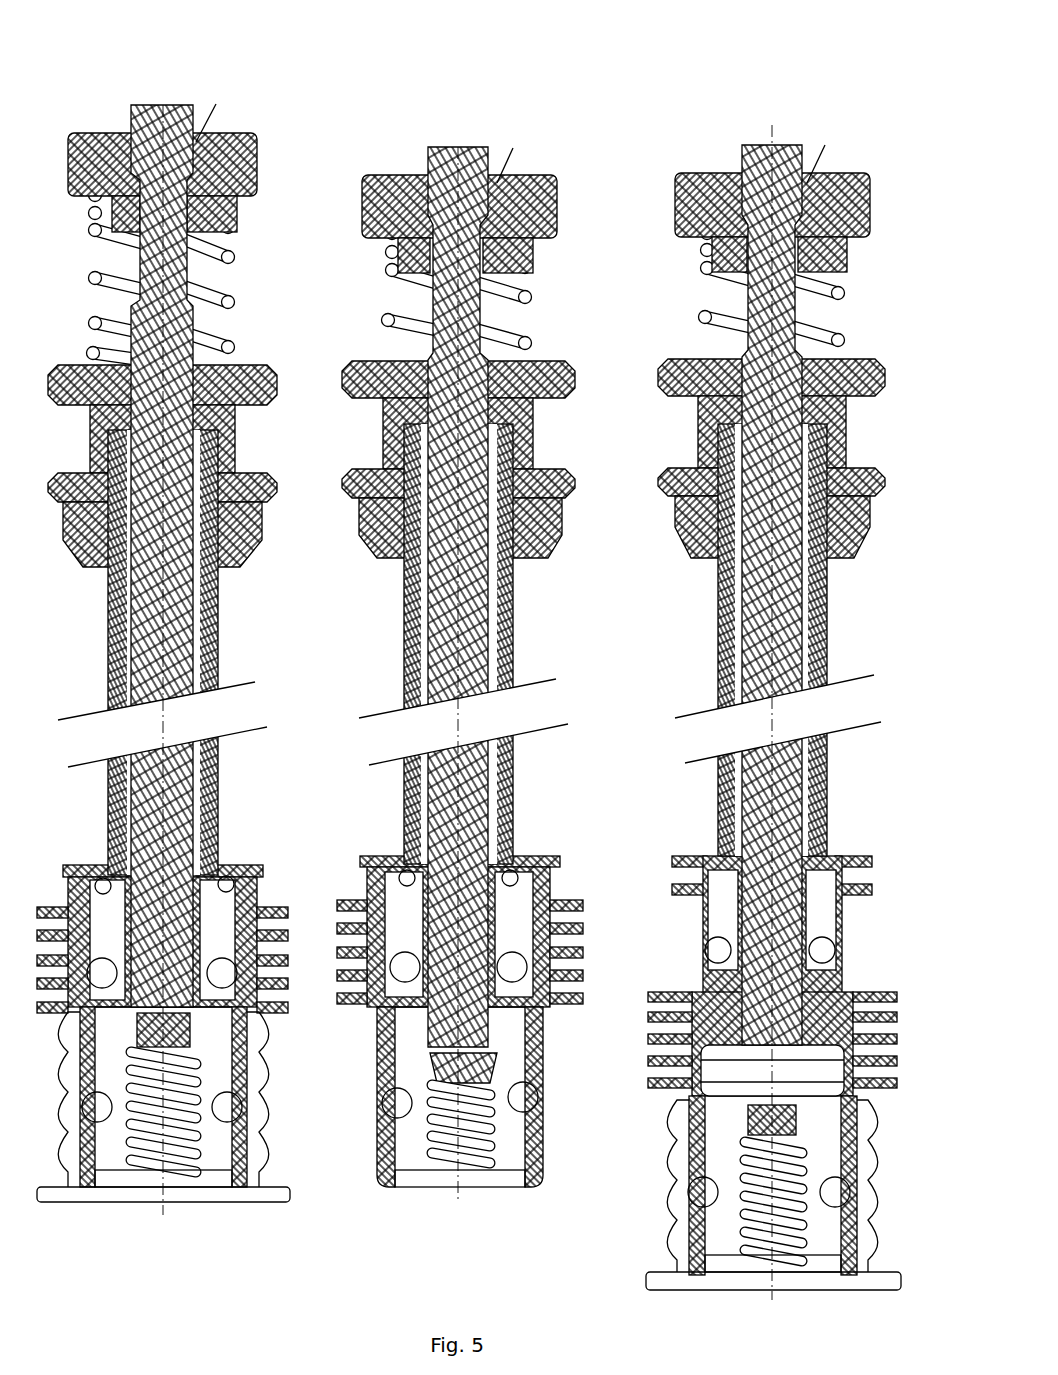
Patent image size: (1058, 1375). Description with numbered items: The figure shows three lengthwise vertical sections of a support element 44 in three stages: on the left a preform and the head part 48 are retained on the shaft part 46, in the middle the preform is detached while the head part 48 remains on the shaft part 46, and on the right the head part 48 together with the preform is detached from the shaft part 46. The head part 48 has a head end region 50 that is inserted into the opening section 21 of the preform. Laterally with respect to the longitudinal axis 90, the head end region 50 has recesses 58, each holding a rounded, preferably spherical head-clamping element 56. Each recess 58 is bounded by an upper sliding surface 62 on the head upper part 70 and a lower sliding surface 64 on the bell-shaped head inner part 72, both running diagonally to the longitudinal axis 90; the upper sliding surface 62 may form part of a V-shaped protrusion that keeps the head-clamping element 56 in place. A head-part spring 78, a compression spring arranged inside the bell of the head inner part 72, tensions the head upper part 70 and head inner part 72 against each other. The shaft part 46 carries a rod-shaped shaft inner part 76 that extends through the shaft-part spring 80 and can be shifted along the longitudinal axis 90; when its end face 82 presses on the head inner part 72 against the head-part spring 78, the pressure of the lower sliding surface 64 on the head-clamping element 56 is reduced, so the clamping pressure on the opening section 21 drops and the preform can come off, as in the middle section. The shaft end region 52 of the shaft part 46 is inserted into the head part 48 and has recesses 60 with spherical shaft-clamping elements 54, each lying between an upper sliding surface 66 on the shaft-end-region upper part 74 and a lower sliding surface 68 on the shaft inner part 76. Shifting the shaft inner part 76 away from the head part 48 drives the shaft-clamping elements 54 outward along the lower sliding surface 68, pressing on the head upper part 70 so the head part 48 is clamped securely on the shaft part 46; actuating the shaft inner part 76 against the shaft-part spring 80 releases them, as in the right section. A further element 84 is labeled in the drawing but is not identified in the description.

The support element 44 is at (158, 95).
The longitudinal axis 90 is at (198, 110).
The shaft-part spring 80 is at (232, 290).
The shaft part 46 is at (246, 650).
The shaft inner part 76 is at (517, 665).
The shaft-end-region upper part 74 is at (488, 918).
The shaft end region 52 is at (263, 900).
The recesses 60 is at (562, 920).
The shaft-clamping element 54 is at (548, 952).
The upper sliding surface 66 is at (792, 926).
The lower sliding surface 68 is at (835, 968).
The head upper part 70 is at (197, 1092).
The upper sliding surface 62 is at (365, 1055).
The head-clamping element 56 is at (370, 1095).
The lower sliding surface 64 is at (375, 1100).
The head end region 50 is at (175, 1161).
The head part 48 is at (553, 1042).
The recesses 58 is at (550, 1074).
The end face 82 is at (660, 1080).
The finned body 84 is at (650, 1094).
The head-part spring 78 is at (502, 1132).
The head inner part 72 is at (548, 1120).
The opening section 21 is at (665, 1258).